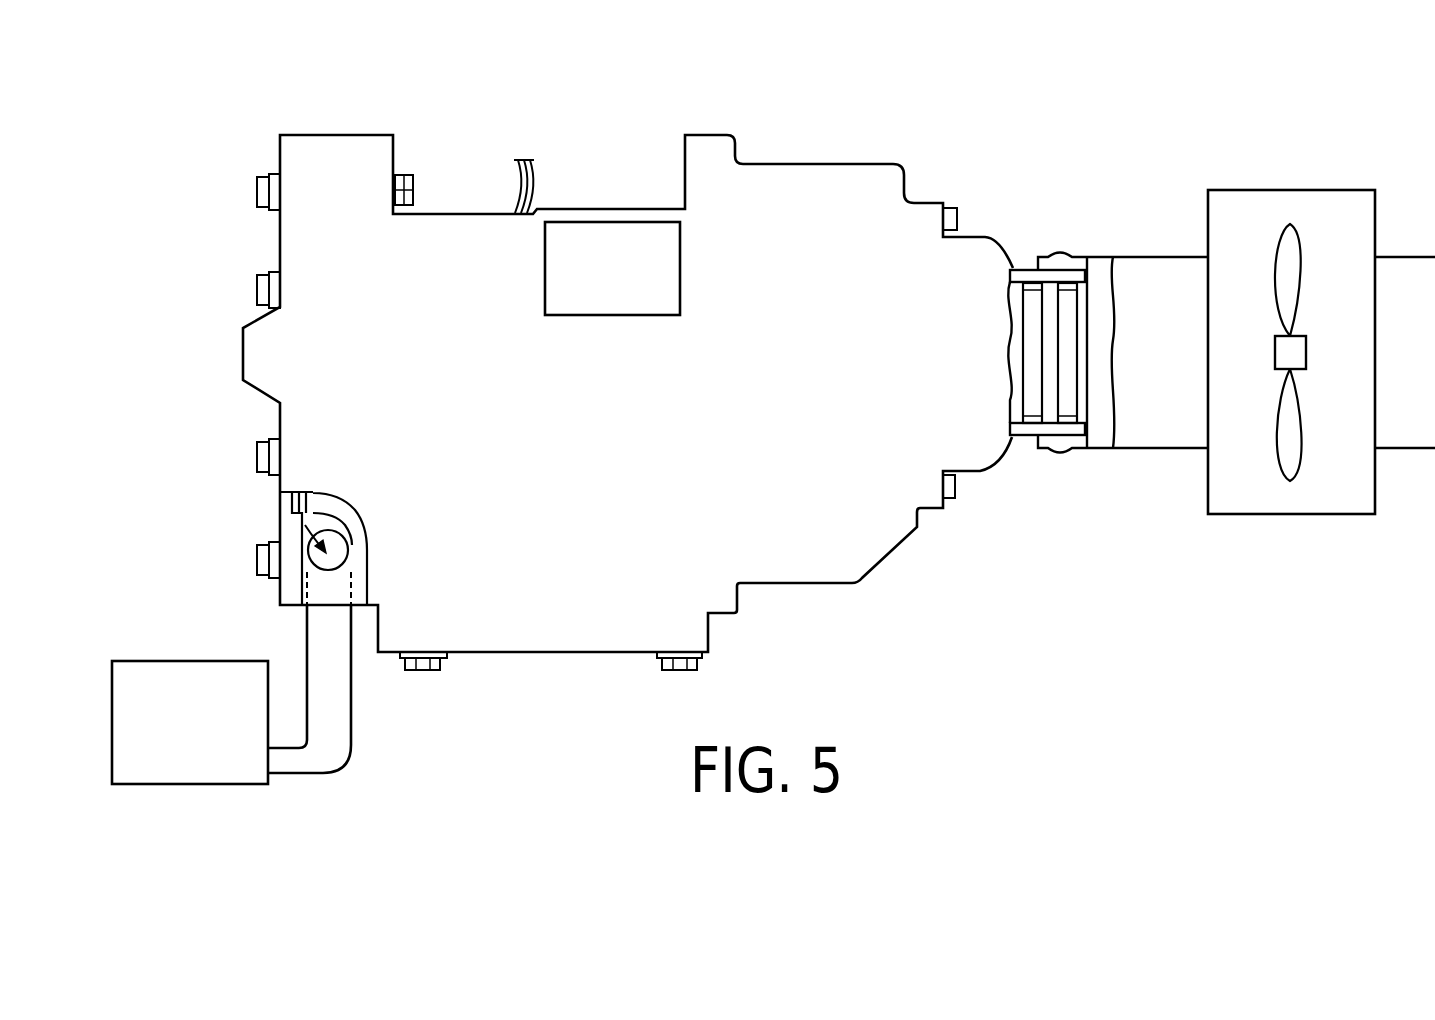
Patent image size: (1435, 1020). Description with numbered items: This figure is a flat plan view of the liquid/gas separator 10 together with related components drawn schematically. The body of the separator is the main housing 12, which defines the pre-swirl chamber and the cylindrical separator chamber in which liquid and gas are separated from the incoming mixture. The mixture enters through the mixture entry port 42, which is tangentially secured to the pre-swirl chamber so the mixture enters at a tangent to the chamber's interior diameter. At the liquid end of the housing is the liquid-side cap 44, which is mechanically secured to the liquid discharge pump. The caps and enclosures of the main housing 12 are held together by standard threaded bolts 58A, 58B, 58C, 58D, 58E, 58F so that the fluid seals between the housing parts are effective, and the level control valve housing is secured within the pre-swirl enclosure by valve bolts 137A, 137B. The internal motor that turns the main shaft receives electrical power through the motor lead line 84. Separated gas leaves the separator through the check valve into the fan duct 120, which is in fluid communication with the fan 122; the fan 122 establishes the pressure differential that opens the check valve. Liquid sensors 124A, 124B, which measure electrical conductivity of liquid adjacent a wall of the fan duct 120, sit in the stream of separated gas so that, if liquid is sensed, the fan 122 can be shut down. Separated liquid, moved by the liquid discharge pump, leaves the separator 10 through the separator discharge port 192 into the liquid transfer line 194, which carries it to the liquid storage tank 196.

The liquid/gas separator 10 is at (455, 97).
The main housing 12 is at (792, 218).
The mixture entry port 42 is at (610, 248).
The liquid-side cap 44 is at (277, 595).
The bolt 58A is at (262, 192).
The bolt 58B is at (262, 290).
The bolt 58C is at (262, 457).
The bolt 58D is at (262, 560).
The bolt 58E is at (955, 487).
The bolt 58F is at (957, 218).
The motor lead line 84 is at (512, 182).
The fan duct 120 is at (1163, 272).
The fan 122 is at (1255, 207).
The liquid sensor 124A is at (1033, 420).
The liquid sensor 124B is at (1067, 415).
The valve bolt 137A is at (420, 670).
The valve bolt 137B is at (680, 670).
The separator discharge port 192 is at (345, 557).
The liquid transfer line 194 is at (338, 707).
The liquid storage tank 196 is at (192, 762).